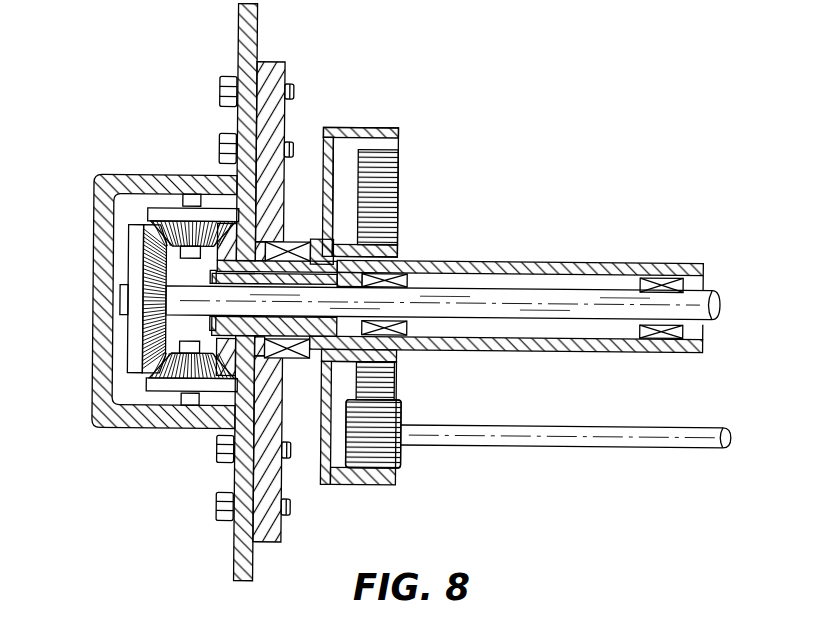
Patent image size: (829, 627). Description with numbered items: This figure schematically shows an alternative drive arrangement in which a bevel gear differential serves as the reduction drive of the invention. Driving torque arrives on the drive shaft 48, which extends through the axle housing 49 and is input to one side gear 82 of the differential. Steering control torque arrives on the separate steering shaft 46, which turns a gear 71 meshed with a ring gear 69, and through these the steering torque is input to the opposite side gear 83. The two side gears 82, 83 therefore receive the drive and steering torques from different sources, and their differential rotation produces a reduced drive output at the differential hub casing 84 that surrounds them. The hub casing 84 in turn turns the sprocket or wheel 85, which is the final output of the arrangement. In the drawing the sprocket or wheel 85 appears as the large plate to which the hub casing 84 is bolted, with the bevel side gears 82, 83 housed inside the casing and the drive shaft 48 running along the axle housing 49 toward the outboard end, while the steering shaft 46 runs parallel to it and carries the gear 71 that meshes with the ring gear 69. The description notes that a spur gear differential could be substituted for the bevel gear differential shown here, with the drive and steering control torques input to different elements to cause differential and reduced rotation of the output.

The sprocket or wheel 85 is at (238, 22).
The differential hub casing 84 is at (138, 177).
The side gear 82 is at (130, 250).
The opposite side gear 83 is at (240, 396).
The axle housing 49 is at (547, 262).
The drive shaft 48 is at (593, 317).
The gear 71 is at (405, 410).
The ring gear 69 is at (378, 485).
The steering shaft 46 is at (639, 448).